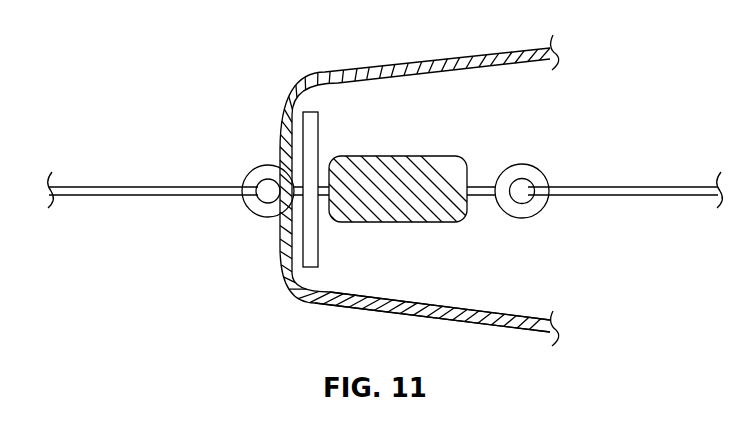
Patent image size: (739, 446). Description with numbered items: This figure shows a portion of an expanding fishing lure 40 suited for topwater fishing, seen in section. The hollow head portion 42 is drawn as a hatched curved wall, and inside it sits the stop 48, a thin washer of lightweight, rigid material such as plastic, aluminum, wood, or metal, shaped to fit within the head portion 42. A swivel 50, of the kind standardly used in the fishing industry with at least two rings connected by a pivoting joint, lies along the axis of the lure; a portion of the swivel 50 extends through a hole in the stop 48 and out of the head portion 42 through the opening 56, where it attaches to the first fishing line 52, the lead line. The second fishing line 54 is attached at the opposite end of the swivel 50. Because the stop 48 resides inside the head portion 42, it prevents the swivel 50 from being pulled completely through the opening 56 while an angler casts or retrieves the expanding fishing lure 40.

The expanding fishing lure 40 is at (330, 46).
The head portion 42 is at (470, 326).
The stop 48 is at (312, 145).
The swivel 50 is at (398, 156).
The first fishing line 52 is at (157, 183).
The second fishing line 54 is at (623, 183).
The opening 56 is at (287, 213).